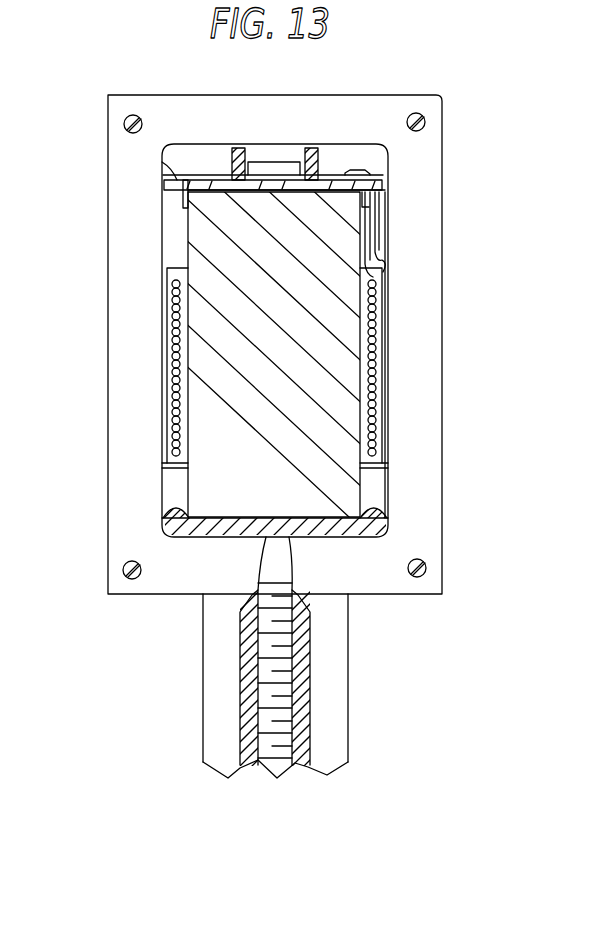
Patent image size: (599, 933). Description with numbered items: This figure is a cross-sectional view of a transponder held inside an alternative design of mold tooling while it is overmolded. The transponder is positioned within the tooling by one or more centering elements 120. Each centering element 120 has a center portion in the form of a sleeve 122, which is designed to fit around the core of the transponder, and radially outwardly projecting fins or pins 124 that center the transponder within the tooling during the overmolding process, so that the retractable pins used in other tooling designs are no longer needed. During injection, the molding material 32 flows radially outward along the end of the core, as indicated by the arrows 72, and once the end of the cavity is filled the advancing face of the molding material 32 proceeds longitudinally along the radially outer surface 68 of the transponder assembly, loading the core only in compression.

The centering element 120 is at (322, 158).
The radially outwardly projecting fins or pins 124 is at (162, 162).
The sleeve 122 is at (183, 206).
The radially outer surface 68 is at (187, 490).
The molding material 32 is at (300, 538).
The arrows 72 is at (236, 540).